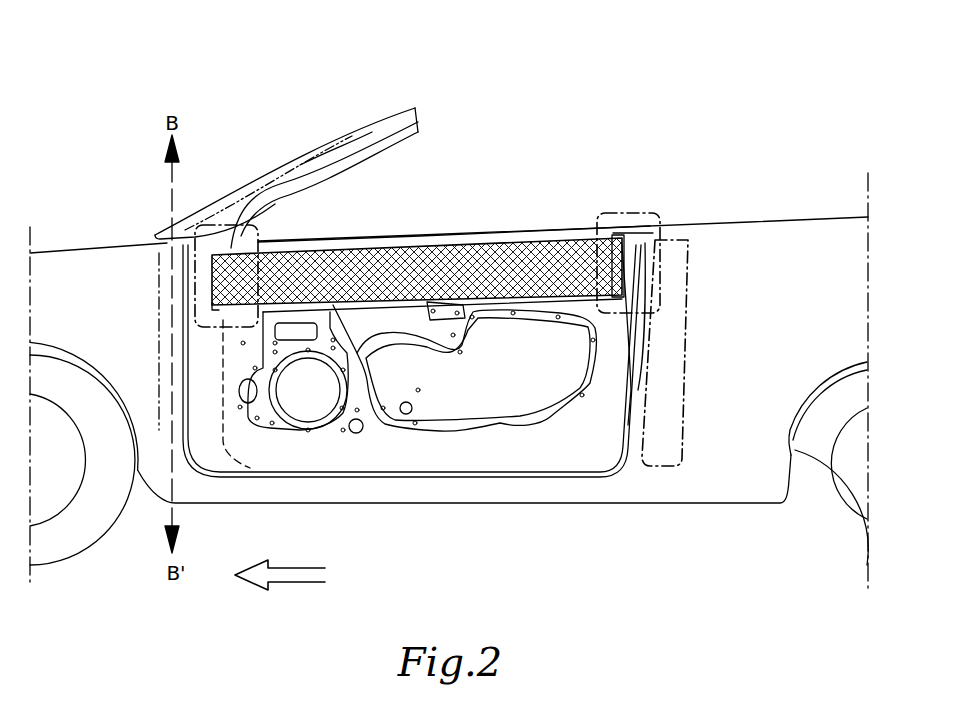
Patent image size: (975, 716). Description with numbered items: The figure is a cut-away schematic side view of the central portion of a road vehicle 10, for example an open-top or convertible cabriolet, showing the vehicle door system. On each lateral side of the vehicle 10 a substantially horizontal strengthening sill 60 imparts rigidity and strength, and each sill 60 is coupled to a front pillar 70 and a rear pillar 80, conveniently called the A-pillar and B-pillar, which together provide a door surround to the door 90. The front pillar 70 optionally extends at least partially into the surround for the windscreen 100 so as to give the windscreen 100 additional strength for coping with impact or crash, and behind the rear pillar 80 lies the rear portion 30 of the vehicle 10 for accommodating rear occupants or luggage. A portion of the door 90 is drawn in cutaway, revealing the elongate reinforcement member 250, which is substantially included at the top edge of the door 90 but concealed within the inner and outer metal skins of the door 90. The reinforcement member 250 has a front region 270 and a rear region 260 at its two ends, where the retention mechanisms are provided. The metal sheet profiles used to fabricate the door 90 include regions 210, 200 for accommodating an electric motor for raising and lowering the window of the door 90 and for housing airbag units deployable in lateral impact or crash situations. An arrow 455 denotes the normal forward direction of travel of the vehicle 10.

The road vehicle 10 is at (126, 62).
The rear portion 30 is at (808, 280).
The strengthening sill 60 is at (420, 487).
The front pillar 70 is at (288, 165).
The rear pillar 80 is at (678, 320).
The door 90 is at (514, 217).
The windscreen 100 is at (388, 126).
The region for housing airbag units 200 is at (505, 400).
The region for accommodating an electric motor 210 is at (300, 408).
The reinforcement member 250 is at (455, 263).
The rear region 260 is at (633, 212).
The front region 270 is at (228, 262).
The arrow 455 is at (295, 577).